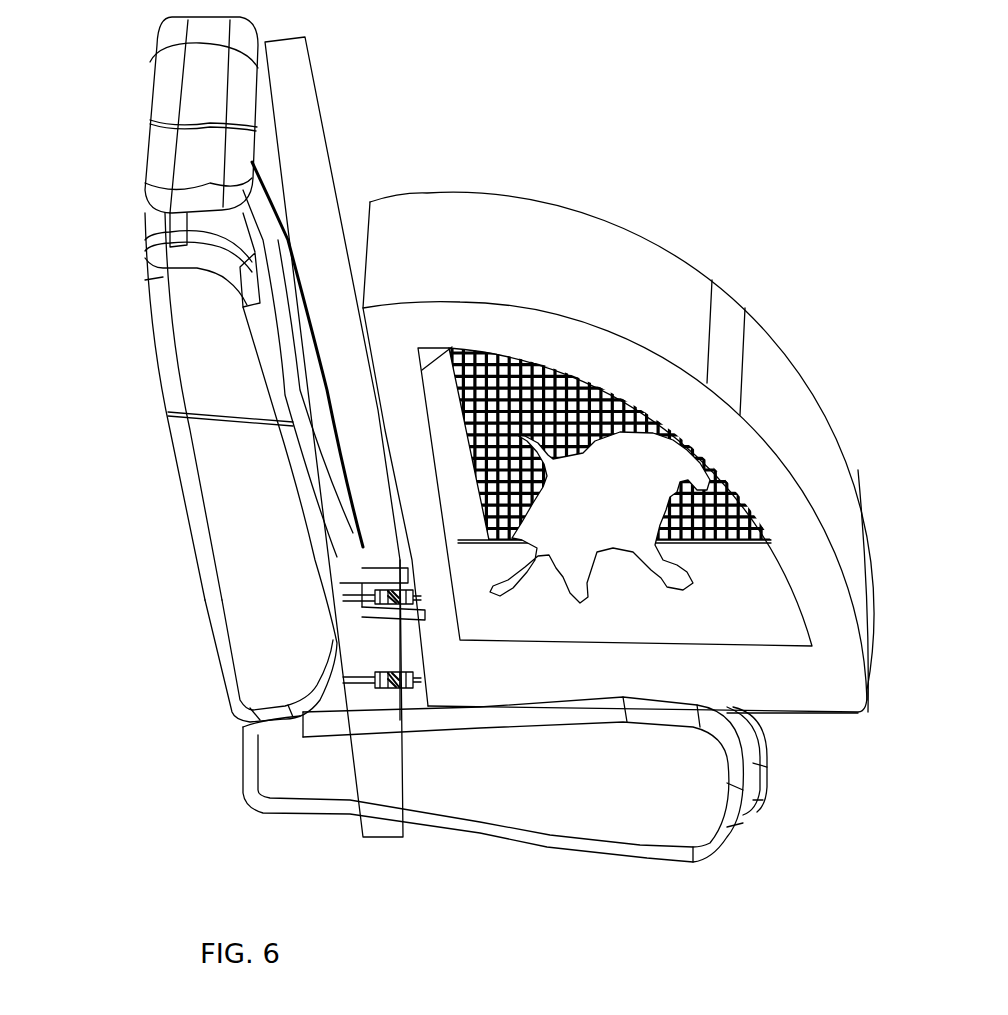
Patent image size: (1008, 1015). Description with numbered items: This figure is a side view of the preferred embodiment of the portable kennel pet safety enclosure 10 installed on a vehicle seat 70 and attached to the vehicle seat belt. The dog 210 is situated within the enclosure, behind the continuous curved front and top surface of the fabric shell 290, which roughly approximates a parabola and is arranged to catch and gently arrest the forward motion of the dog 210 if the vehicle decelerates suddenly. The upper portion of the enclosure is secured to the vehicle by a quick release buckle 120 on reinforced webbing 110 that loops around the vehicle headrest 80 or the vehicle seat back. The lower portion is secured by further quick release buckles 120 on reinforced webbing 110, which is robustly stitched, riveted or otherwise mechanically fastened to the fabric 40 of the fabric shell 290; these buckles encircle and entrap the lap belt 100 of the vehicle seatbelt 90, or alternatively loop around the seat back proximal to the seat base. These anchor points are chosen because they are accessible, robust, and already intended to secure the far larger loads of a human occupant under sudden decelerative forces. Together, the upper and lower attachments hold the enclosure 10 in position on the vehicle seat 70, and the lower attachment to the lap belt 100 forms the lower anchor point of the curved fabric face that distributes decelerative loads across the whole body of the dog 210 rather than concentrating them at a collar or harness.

The portable kennel pet safety enclosure 10 is at (590, 238).
The fabric 40 is at (448, 632).
The vehicle seat 70 is at (267, 582).
The vehicle headrest 80 is at (160, 92).
The vehicle seatbelt 90 is at (310, 183).
The lap belt 100 is at (380, 640).
The reinforced webbing 110 is at (400, 583).
The quick release buckle 120 is at (397, 690).
The dog 210 is at (652, 480).
The fabric shell 290 is at (815, 692).